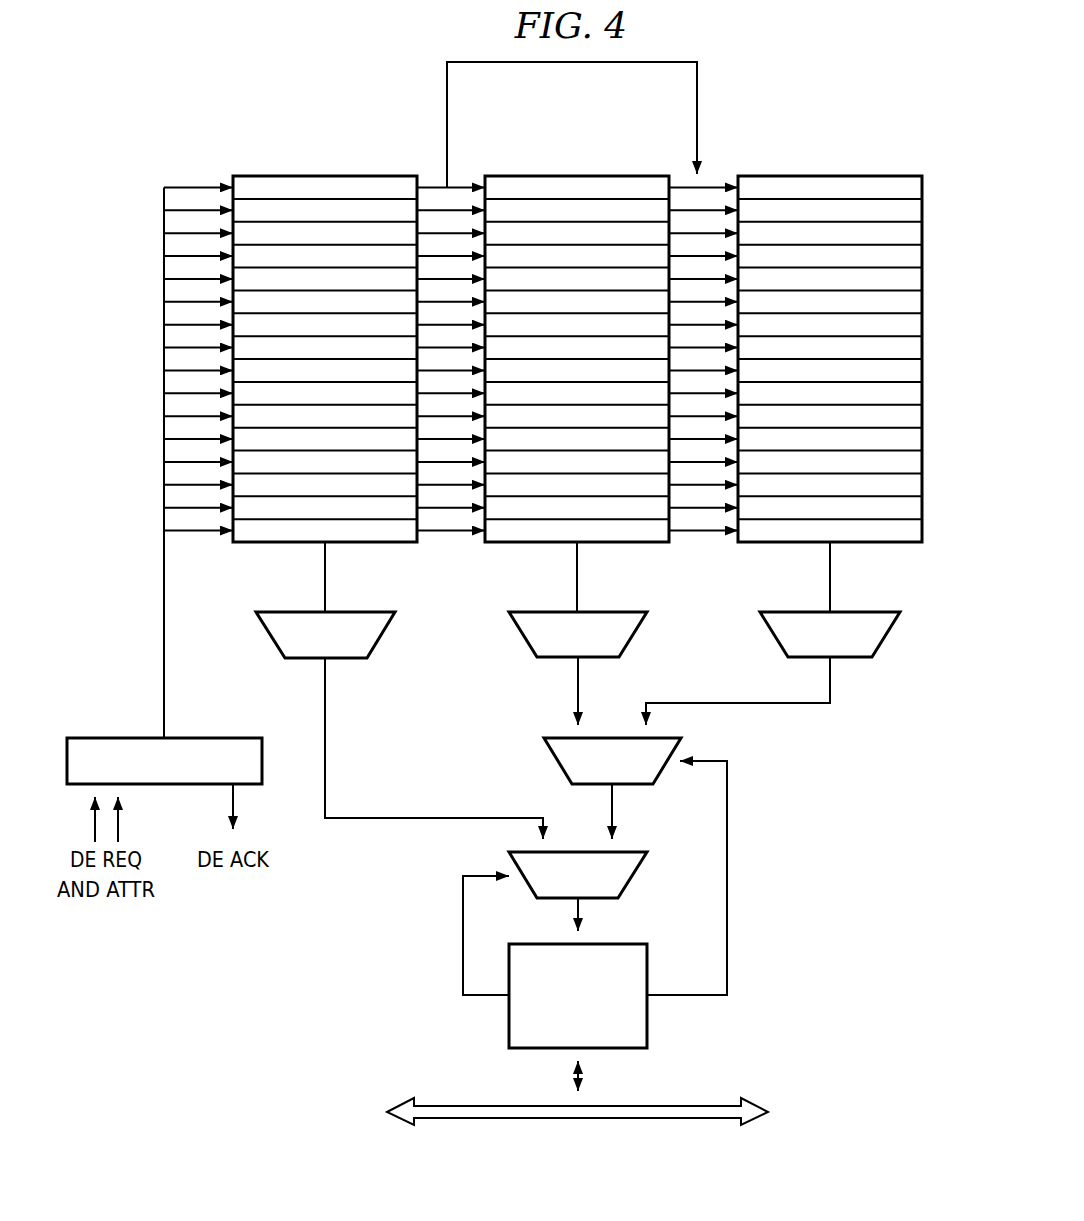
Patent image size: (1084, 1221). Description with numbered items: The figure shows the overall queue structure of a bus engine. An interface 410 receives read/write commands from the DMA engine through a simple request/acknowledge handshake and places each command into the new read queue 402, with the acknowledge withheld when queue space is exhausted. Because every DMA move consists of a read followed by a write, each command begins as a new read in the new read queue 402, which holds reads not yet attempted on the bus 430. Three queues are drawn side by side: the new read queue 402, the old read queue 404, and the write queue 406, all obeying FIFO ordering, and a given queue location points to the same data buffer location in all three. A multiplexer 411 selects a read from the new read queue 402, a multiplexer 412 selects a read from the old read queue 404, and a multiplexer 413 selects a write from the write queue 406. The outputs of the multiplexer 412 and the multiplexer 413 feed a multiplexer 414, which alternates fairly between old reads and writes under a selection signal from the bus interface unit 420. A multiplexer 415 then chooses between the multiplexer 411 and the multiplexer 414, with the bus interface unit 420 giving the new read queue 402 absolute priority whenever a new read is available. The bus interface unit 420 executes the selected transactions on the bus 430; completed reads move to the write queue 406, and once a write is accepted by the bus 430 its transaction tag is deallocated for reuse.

The new read queue 402 is at (325, 163).
The old read queue 404 is at (577, 163).
The write queue 406 is at (830, 163).
The interface 410 is at (108, 736).
The multiplexer 411 is at (268, 637).
The multiplexer 412 is at (637, 637).
The multiplexer 413 is at (890, 637).
The multiplexer 414 is at (556, 762).
The multiplexer 415 is at (636, 878).
The bus interface unit 420 is at (509, 1020).
The bus 430 is at (705, 1100).